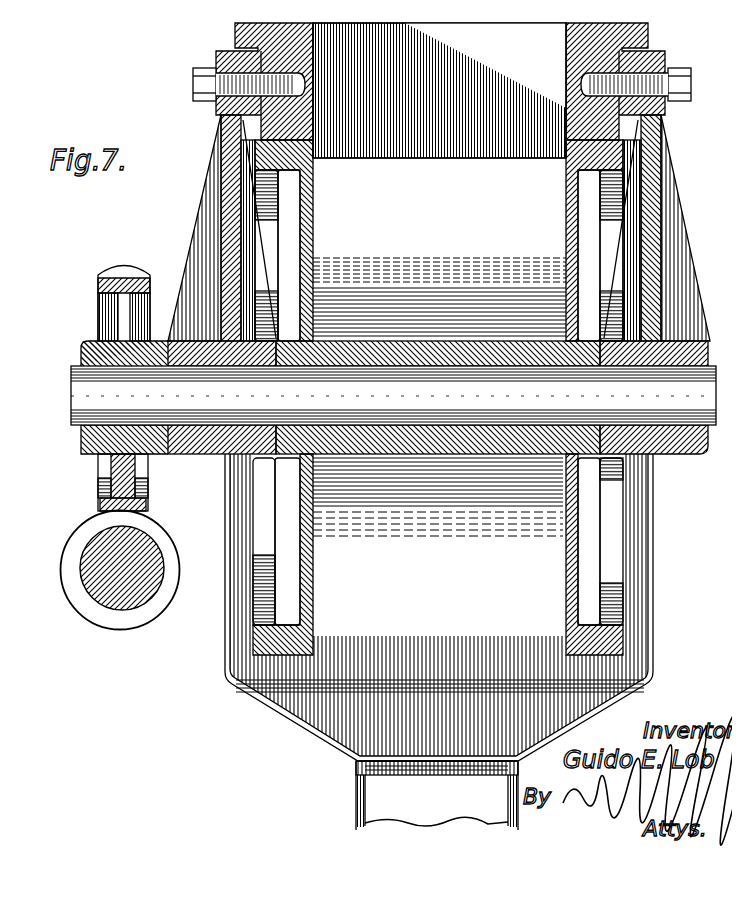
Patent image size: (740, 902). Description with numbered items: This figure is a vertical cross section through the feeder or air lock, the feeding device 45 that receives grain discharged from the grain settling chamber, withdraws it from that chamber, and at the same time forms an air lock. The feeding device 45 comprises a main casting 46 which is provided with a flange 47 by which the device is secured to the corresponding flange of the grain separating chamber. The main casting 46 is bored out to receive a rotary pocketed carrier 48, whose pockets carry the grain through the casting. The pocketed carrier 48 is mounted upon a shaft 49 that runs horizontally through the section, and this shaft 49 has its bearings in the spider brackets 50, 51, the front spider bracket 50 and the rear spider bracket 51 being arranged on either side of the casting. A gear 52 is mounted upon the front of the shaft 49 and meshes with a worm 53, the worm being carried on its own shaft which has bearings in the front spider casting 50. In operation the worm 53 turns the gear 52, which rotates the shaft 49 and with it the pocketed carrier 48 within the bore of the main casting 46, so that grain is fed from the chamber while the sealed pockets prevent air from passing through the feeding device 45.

The feeding device 45 is at (187, 104).
The main casting 46 is at (557, 47).
The flange 47 is at (243, 25).
The rotary pocketed carrier 48 is at (348, 197).
The shaft 49 is at (83, 383).
The front spider bracket 50 is at (220, 171).
The rear spider bracket 51 is at (642, 202).
The gear 52 is at (88, 472).
The worm 53 is at (97, 557).